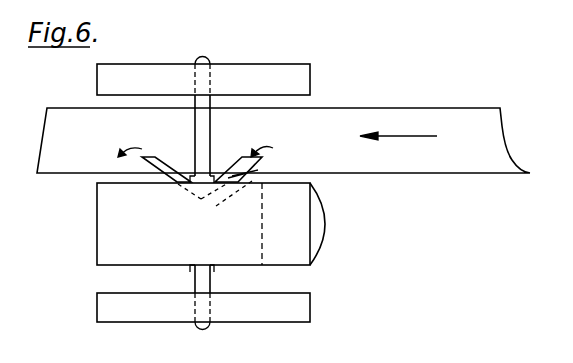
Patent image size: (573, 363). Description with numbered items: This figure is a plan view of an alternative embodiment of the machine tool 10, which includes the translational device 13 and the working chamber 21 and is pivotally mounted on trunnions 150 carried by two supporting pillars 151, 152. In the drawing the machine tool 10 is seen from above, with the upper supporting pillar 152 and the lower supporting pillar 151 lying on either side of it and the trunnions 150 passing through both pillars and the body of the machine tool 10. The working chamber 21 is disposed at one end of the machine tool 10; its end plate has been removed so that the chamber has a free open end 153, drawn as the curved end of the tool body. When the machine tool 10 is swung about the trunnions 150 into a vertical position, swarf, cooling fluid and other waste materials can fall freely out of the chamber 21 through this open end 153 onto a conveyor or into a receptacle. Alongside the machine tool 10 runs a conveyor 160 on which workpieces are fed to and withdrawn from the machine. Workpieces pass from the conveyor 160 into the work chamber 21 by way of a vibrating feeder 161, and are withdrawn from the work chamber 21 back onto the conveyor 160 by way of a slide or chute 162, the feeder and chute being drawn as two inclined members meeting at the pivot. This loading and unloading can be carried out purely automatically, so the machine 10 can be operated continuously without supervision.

The machine tool 10 is at (241, 246).
The translational device 13 is at (134, 215).
The working chamber 21 is at (282, 224).
The trunnions 150 is at (190, 325).
The supporting pillar 151 is at (100, 306).
The supporting pillar 152 is at (143, 60).
The free open end 153 is at (322, 229).
The conveyor 160 is at (427, 117).
The vibrating feeder 161 is at (240, 177).
The slide or chute 162 is at (125, 184).